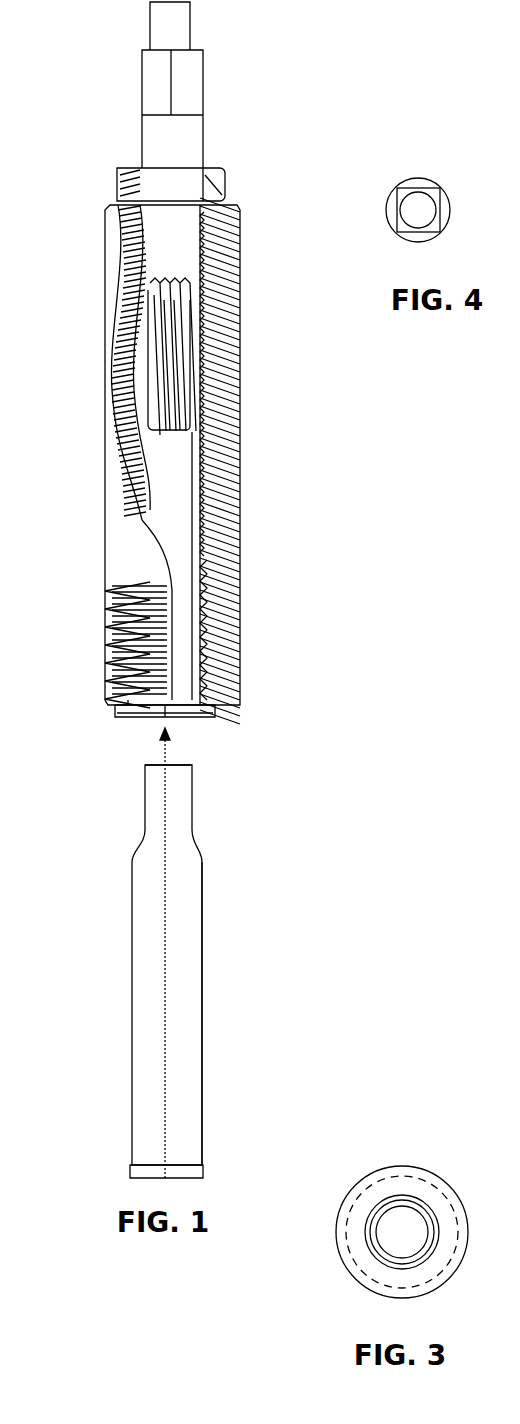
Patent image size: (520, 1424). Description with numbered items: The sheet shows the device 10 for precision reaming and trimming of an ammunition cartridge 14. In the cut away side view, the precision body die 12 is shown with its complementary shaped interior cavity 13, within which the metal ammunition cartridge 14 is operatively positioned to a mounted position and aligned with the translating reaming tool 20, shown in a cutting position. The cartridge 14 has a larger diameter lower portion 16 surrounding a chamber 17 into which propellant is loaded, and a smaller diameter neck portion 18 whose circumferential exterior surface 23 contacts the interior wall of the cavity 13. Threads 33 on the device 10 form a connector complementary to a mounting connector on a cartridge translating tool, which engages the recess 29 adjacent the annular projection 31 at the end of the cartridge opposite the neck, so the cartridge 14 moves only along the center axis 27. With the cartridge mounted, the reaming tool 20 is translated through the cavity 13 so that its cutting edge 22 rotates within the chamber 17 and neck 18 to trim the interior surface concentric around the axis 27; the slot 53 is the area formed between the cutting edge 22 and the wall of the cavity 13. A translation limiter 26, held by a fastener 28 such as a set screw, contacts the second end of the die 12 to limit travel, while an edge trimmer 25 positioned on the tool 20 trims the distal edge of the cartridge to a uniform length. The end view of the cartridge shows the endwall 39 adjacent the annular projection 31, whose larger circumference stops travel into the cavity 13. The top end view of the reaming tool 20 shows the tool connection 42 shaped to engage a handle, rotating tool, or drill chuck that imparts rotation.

In FIG. 1, the device 10 is at (273, 130).
In FIG. 1, the body die 12 is at (105, 545).
In FIG. 1, the interior cavity 13 is at (215, 713).
In FIG. 1, the ammunition cartridge 14 is at (203, 947).
In FIG. 1, the lower portion 16 is at (200, 560).
In FIG. 1, the chamber 17 is at (187, 1030).
In FIG. 1, the neck portion 18 is at (203, 370).
In FIG. 1, the reaming tool 20 is at (148, 145).
In FIG. 4, the reaming tool 20 is at (435, 182).
In FIG. 1, the cutting edge 22 is at (173, 337).
In FIG. 1, the exterior surface 23 is at (170, 798).
In FIG. 1, the edge trimmer 25 is at (200, 318).
In FIG. 1, the translation limiter 26 is at (225, 195).
In FIG. 1, the center axis 27 is at (165, 950).
In FIG. 1, the fastener 28 is at (120, 185).
In FIG. 1, the recess 29 is at (130, 697).
In FIG. 1, the annular projection 31 is at (115, 714).
In FIG. 3, the annular projection 31 is at (440, 1178).
In FIG. 1, the threads 33 is at (223, 613).
In FIG. 1, the endwall 39 is at (197, 720).
In FIG. 3, the endwall 39 is at (355, 1237).
In FIG. 1, the tool connection 42 is at (178, 20).
In FIG. 4, the tool connection 42 is at (392, 198).
In FIG. 1, the slot 53 is at (130, 377).